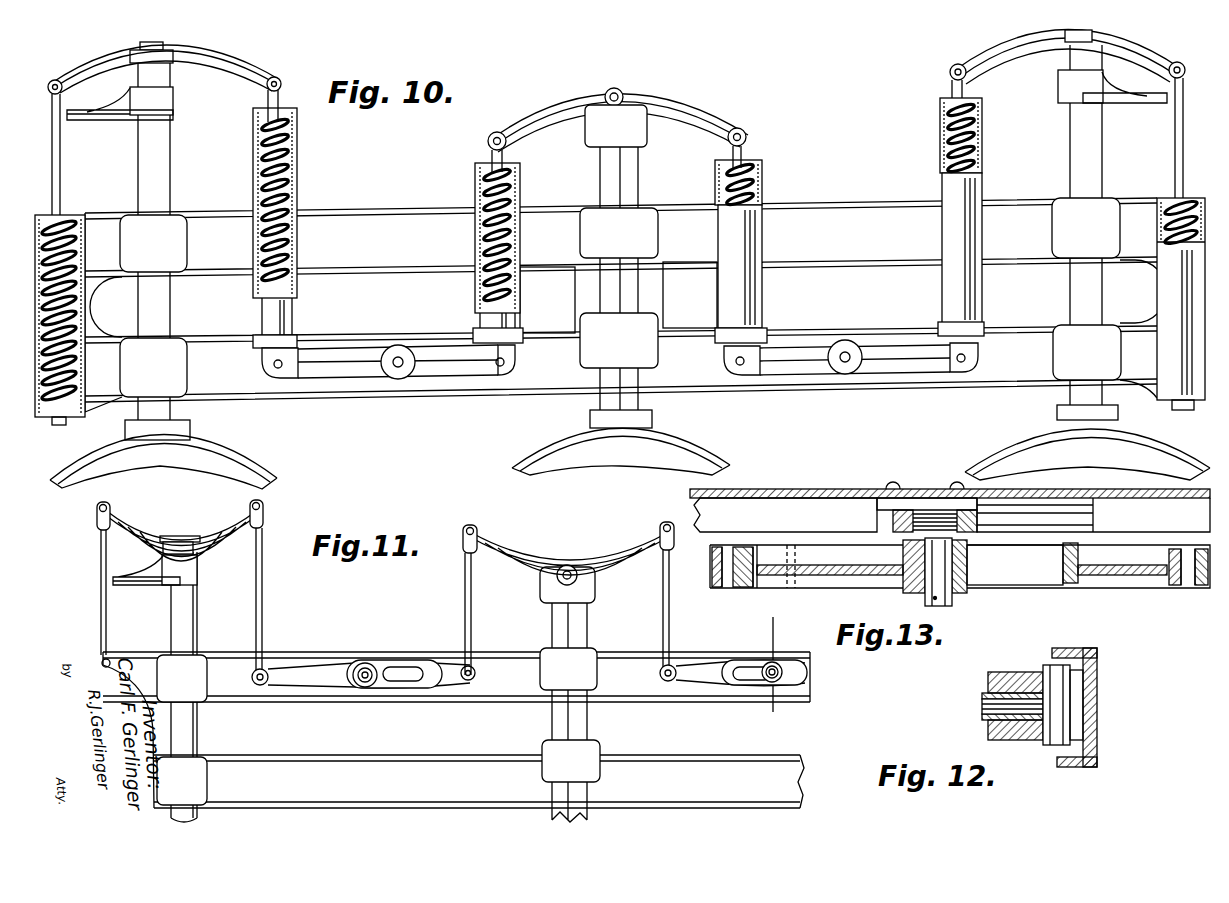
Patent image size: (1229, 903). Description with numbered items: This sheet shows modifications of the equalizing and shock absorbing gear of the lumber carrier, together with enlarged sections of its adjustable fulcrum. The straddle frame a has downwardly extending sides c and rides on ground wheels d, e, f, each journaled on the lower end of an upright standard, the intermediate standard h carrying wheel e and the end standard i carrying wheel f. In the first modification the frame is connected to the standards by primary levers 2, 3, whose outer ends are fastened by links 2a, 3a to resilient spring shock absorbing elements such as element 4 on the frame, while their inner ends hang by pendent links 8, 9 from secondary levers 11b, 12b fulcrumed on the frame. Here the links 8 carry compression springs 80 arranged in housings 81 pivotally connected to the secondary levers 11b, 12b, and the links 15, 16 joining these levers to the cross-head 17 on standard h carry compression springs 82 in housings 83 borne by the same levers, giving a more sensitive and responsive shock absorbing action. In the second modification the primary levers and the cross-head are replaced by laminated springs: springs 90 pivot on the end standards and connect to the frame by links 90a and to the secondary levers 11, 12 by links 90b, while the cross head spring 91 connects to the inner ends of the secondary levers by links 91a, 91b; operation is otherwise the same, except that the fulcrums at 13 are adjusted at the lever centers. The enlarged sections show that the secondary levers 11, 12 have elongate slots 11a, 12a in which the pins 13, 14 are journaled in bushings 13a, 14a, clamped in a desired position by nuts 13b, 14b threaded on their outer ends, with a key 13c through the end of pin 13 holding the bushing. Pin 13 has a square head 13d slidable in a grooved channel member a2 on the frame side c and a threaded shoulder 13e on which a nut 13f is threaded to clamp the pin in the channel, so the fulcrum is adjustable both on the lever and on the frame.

In FIG. 10, the primary lever 2 is at (231, 63).
In FIG. 10, the link 2a is at (60, 153).
In FIG. 10, the primary lever 3 is at (1003, 48).
In FIG. 10, the link 3a is at (1176, 147).
In FIG. 10, the resilient spring shock absorbing element 4 is at (75, 212).
In FIG. 10, the pendent link 8 is at (280, 99).
In FIG. 10, the pendent link 9 is at (160, 168).
In FIG. 11, the pendent link 9 is at (185, 732).
In FIG. 13, the secondary lever 11 is at (1110, 570).
In FIG. 11, the secondary lever 11 is at (312, 670).
In FIG. 13, the elongate slot 11a is at (1029, 575).
In FIG. 11, the elongate slot 11a is at (393, 670).
In FIG. 10, the secondary lever 11b is at (353, 372).
In FIG. 12, the secondary lever 12 is at (1017, 677).
In FIG. 11, the secondary lever 12 is at (697, 668).
In FIG. 11, the elongate slot 12a is at (735, 666).
In FIG. 10, the secondary lever 12b is at (818, 368).
In FIG. 13, the pin 13 is at (949, 606).
In FIG. 11, the pin 13 is at (253, 677).
In FIG. 13, the bushing 13a is at (972, 567).
In FIG. 13, the nut 13b is at (905, 592).
In FIG. 11, the nut 13b is at (360, 688).
In FIG. 13, the key 13c is at (938, 606).
In FIG. 13, the square head 13d is at (930, 490).
In FIG. 13, the threaded shoulder 13e is at (953, 493).
In FIG. 13, the nut 13f is at (900, 486).
In FIG. 12, the pin 14 is at (980, 706).
In FIG. 11, the pin 14 is at (808, 673).
In FIG. 12, the bushing 14a is at (1015, 742).
In FIG. 12, the nut 14b is at (987, 681).
In FIG. 11, the nut 14b is at (770, 682).
In FIG. 10, the link 15 is at (487, 153).
In FIG. 10, the link 16 is at (744, 153).
In FIG. 10, the cross-head 17 is at (563, 105).
In FIG. 10, the compression spring 80 is at (294, 184).
In FIG. 10, the housing 81 is at (297, 150).
In FIG. 10, the compression spring 82 is at (518, 194).
In FIG. 10, the housing 83 is at (480, 241).
In FIG. 11, the laminated spring 90 is at (187, 512).
In FIG. 11, the link 90a is at (107, 617).
In FIG. 11, the link 90b is at (262, 596).
In FIG. 11, the cross head spring 91 is at (562, 548).
In FIG. 11, the link 91a is at (465, 584).
In FIG. 11, the link 91b is at (672, 584).
In FIG. 10, the straddle frame a is at (390, 192).
In FIG. 13, the straddle frame a is at (797, 481).
In FIG. 11, the straddle frame a is at (435, 808).
In FIG. 13, the grooved channel member a2 is at (1030, 508).
In FIG. 10, the side c is at (410, 222).
In FIG. 13, the side c is at (850, 487).
In FIG. 12, the side c is at (1092, 657).
In FIG. 11, the side c is at (647, 682).
In FIG. 10, the ground wheel d is at (265, 433).
In FIG. 10, the ground wheel e is at (586, 479).
In FIG. 10, the ground wheel f is at (1160, 446).
In FIG. 10, the upright standard h is at (610, 398).
In FIG. 11, the upright standard h is at (567, 718).
In FIG. 10, the upright standard i is at (1075, 393).